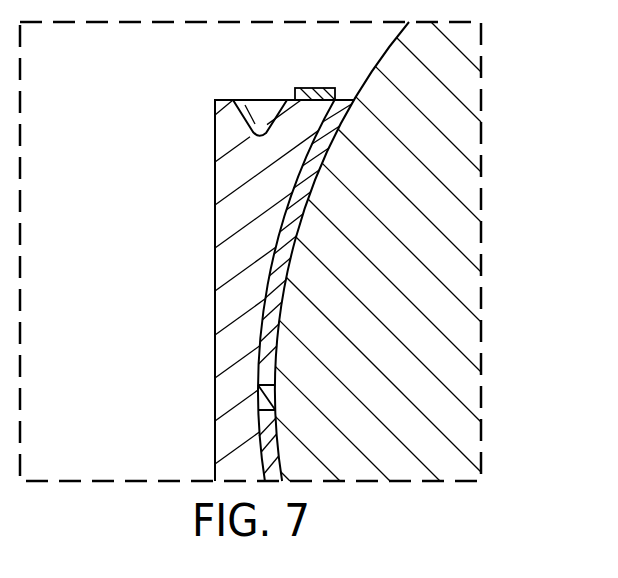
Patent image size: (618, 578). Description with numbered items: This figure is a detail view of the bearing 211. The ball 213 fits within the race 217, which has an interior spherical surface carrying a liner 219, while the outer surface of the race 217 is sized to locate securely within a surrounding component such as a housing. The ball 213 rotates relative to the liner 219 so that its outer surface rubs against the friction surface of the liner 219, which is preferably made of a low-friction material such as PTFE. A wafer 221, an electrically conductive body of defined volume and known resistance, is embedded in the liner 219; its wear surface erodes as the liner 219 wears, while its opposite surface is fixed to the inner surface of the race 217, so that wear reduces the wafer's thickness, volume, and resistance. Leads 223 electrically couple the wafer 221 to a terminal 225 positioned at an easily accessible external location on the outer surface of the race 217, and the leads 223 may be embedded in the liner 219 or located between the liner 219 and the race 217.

The bearing 211 is at (139, 222).
The ball 213 is at (443, 209).
The race 217 is at (215, 184).
The liner 219 is at (270, 360).
The wafer 221 is at (265, 411).
The leads 223 is at (267, 285).
The terminal 225 is at (313, 88).